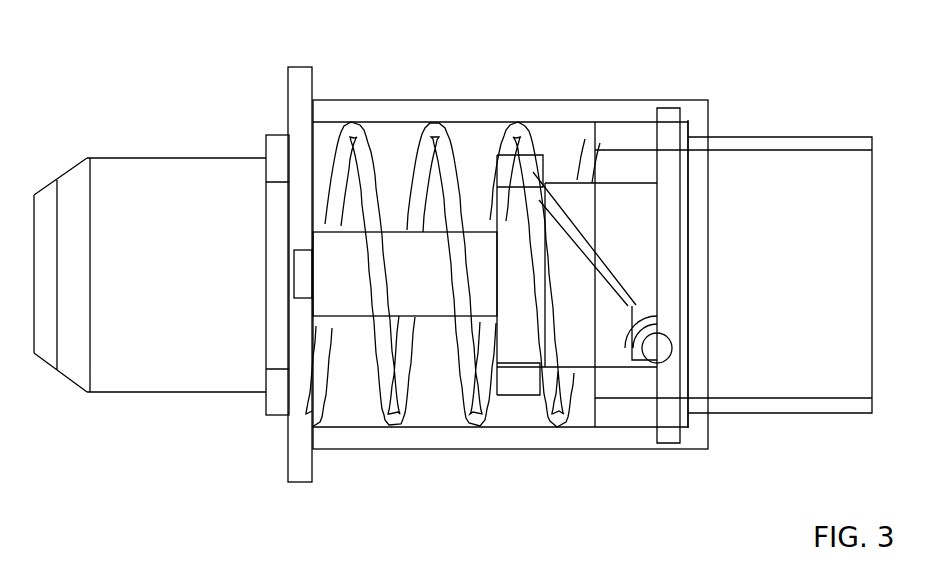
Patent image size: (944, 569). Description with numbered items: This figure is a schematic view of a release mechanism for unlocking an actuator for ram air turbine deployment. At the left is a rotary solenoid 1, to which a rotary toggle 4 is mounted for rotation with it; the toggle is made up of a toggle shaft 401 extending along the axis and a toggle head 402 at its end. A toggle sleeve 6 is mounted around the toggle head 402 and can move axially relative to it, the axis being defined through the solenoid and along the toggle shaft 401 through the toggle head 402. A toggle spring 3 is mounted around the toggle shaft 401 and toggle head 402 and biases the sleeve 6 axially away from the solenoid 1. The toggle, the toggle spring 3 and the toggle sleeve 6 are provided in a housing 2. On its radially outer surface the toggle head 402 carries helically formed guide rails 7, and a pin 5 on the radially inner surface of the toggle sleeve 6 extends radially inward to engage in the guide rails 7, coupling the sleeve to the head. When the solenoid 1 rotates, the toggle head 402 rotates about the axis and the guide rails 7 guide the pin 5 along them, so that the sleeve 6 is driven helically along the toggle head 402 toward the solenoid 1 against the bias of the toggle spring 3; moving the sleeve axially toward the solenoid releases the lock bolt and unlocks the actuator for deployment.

The rotary solenoid 1 is at (175, 187).
The housing 2 is at (383, 112).
The toggle spring 3 is at (518, 125).
The rotary toggle 4 is at (515, 337).
The toggle shaft 401 is at (408, 275).
The toggle head 402 is at (590, 195).
The pin 5 is at (655, 345).
The toggle sleeve 6 is at (800, 218).
The guide rails 7 is at (566, 237).